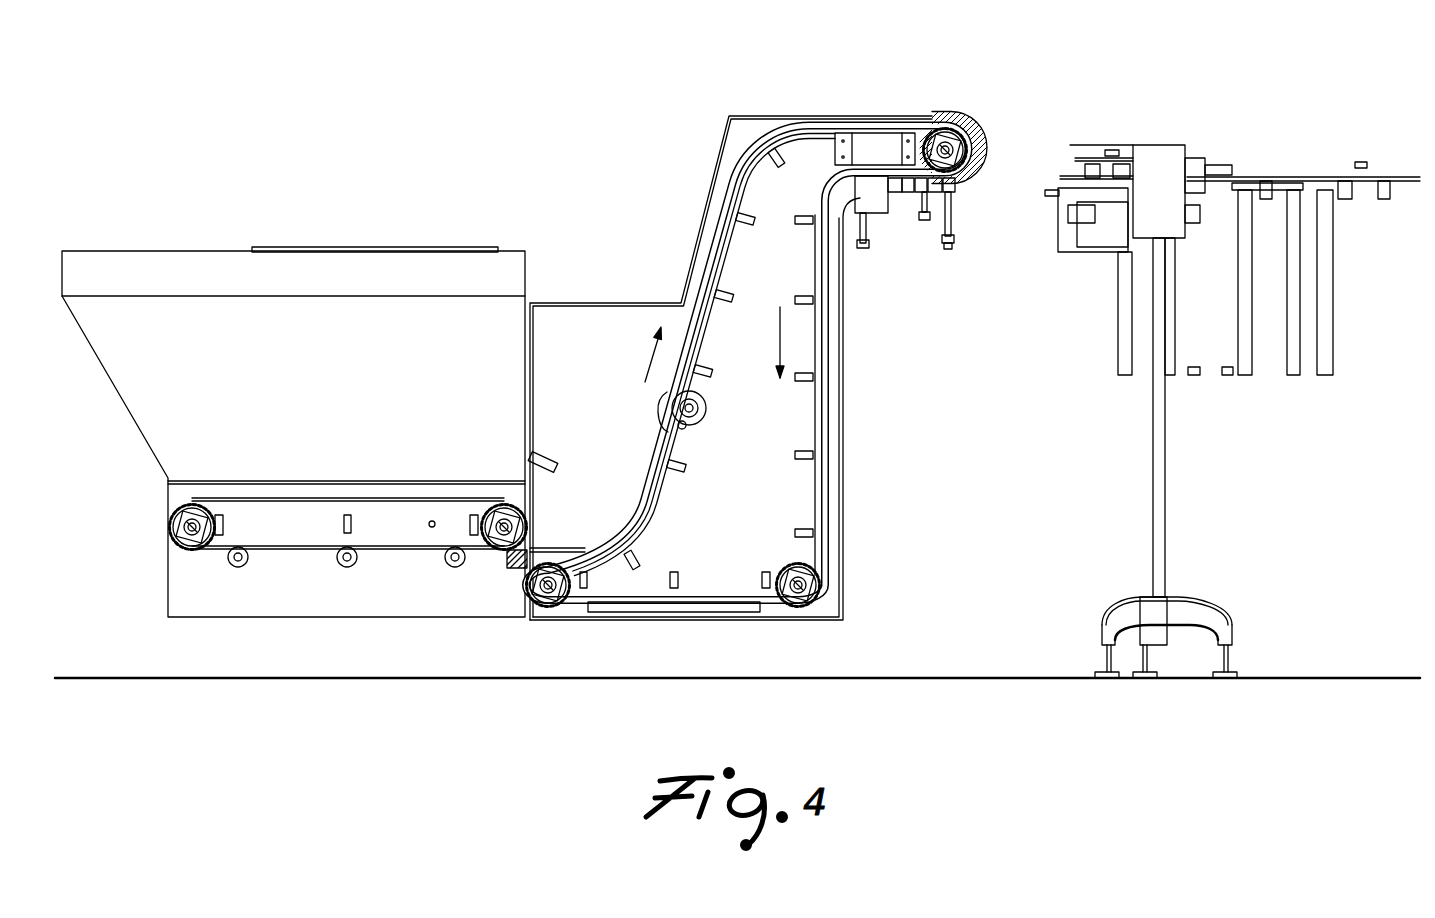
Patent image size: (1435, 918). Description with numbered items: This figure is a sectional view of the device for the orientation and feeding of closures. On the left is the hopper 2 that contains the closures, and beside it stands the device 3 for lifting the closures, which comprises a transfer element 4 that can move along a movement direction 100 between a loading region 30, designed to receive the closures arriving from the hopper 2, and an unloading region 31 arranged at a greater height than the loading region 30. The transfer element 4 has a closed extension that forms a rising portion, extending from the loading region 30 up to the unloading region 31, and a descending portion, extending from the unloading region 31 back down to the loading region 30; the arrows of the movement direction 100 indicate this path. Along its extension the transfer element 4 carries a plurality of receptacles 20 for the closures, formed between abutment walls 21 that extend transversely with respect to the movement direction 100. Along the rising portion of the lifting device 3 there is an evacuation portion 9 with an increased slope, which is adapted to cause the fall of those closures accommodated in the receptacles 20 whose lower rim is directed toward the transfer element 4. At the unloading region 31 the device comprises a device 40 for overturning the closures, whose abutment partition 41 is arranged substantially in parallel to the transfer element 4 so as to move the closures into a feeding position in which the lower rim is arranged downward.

The hopper 2 is at (232, 245).
The device for lifting the closures 3 is at (713, 175).
The transfer element 4 is at (897, 121).
The evacuation portion 9 is at (652, 414).
The receptacles 20 is at (730, 488).
The abutment walls 21 is at (808, 122).
The loading region 30 is at (590, 545).
The unloading region 31 is at (962, 200).
The device for overturning the closures 40 is at (984, 113).
The abutment partition 41 is at (988, 157).
The movement direction 100 is at (652, 364).